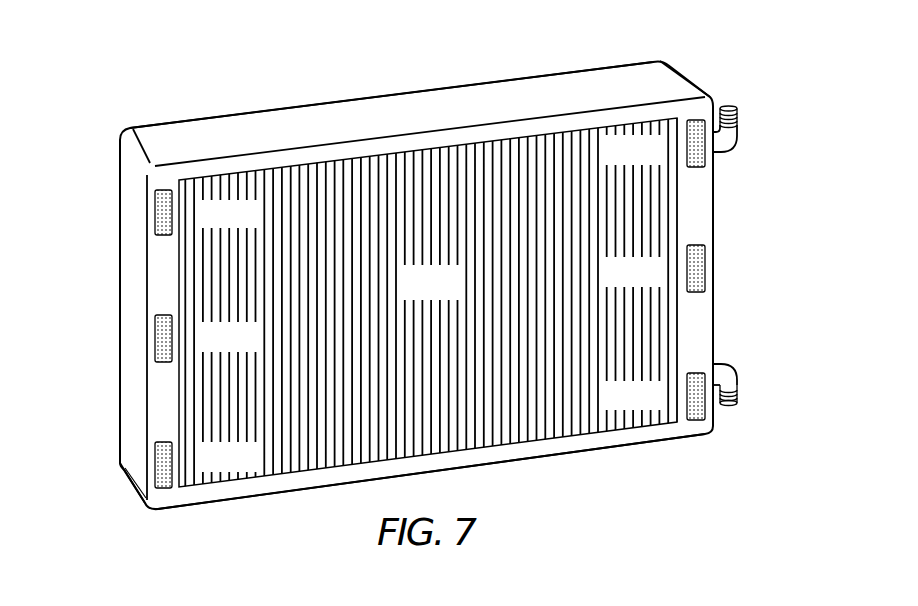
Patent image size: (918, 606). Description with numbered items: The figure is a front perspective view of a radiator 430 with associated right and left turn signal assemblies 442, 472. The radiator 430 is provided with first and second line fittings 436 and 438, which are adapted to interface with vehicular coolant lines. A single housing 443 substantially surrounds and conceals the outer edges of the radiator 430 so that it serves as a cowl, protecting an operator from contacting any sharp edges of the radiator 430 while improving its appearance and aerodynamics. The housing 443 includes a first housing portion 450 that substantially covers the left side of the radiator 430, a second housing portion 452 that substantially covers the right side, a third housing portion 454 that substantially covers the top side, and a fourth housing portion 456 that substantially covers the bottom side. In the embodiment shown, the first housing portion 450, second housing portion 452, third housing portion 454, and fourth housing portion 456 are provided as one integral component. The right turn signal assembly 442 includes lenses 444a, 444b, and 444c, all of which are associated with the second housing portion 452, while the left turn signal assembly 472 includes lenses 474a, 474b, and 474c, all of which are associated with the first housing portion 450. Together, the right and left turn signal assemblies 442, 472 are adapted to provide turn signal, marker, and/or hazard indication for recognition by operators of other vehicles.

The radiator 430 is at (460, 292).
The first line fitting 436 is at (731, 133).
The second line fitting 438 is at (732, 380).
The right turn signal assembly 442 is at (95, 303).
The housing 443 is at (122, 340).
The lens 444a is at (172, 212).
The lens 444b is at (172, 337).
The lens 444c is at (172, 461).
The first housing portion 450 is at (722, 275).
The second housing portion 452 is at (110, 393).
The third housing portion 454 is at (285, 97).
The fourth housing portion 456 is at (300, 498).
The left turn signal assembly 472 is at (727, 228).
The lens 474a is at (687, 152).
The lens 474b is at (687, 278).
The lens 474c is at (687, 400).